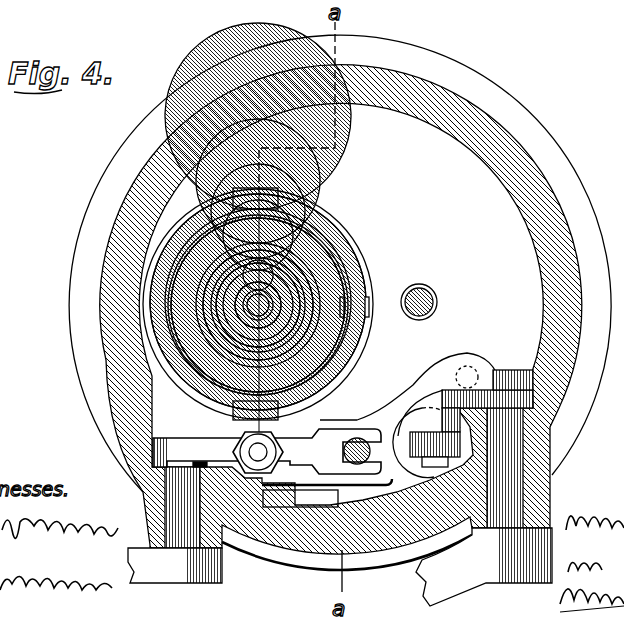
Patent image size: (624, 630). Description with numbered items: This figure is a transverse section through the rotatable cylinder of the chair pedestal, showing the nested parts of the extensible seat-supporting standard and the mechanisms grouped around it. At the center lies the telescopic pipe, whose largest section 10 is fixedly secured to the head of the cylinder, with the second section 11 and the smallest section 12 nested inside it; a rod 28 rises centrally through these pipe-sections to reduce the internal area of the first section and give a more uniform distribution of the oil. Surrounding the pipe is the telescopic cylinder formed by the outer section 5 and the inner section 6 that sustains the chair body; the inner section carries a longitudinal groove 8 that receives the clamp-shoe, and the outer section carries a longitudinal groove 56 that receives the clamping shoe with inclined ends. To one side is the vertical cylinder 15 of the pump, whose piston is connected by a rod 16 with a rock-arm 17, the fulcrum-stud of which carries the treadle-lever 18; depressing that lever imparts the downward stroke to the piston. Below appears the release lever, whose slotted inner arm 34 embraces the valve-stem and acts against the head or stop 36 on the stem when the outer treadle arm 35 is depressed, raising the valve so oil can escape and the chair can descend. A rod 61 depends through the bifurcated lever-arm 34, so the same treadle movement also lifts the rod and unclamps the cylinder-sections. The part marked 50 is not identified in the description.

The outer section of telescopic cylinder 5 is at (314, 236).
The inner section of telescopic cylinder 6 is at (307, 280).
The longitudinal groove 8 is at (343, 311).
The first pipe-section 10 is at (302, 288).
The second pipe-section 11 is at (297, 322).
The third pipe-section 12 is at (327, 361).
The pump-cylinder 15 is at (413, 476).
The piston rod 16 is at (436, 448).
The rock-arm 17 is at (493, 388).
The treadle-lever 18 is at (506, 576).
The rod 28 is at (243, 322).
The inner lever-arm 34 is at (303, 452).
The treadle arm 35 is at (152, 570).
The head or stop 36 is at (255, 474).
The rod 50 is at (437, 302).
The longitudinal groove 56 is at (370, 304).
The rod 61 is at (350, 440).